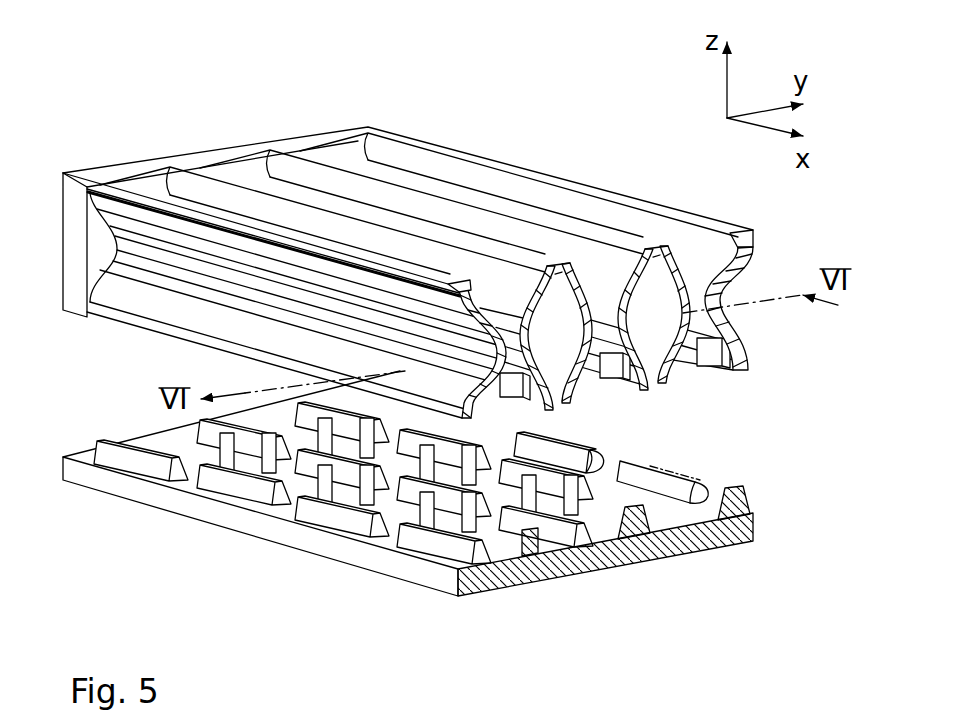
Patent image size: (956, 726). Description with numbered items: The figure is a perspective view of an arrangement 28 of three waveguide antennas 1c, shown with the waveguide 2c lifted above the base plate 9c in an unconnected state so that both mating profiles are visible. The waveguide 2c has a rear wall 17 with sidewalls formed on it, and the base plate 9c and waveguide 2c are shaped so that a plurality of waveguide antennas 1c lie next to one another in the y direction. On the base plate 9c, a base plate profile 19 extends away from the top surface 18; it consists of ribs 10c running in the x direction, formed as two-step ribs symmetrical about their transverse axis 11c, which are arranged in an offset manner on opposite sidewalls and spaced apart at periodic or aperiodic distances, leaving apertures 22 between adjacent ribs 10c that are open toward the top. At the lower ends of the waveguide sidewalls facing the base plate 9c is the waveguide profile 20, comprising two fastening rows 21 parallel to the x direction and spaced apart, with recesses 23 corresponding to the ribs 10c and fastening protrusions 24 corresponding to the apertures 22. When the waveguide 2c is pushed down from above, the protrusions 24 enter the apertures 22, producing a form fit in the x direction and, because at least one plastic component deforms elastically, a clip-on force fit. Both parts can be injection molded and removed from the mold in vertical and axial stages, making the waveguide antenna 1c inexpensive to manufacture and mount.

The waveguide antenna 1c is at (195, 167).
The waveguide 2c is at (445, 154).
The base plate 9c is at (213, 510).
The ribs 10c is at (664, 467).
The transverse axis 11c is at (742, 495).
The rear wall 17 is at (140, 178).
The top surface 18 is at (557, 407).
The base plate profile 19 is at (540, 574).
The waveguide profile 20 is at (638, 396).
The fastening rows 21 is at (697, 553).
The apertures 22 is at (719, 486).
The recesses 23 is at (608, 355).
The fastening protrusions 24 is at (597, 366).
The arrangement 28 is at (227, 110).